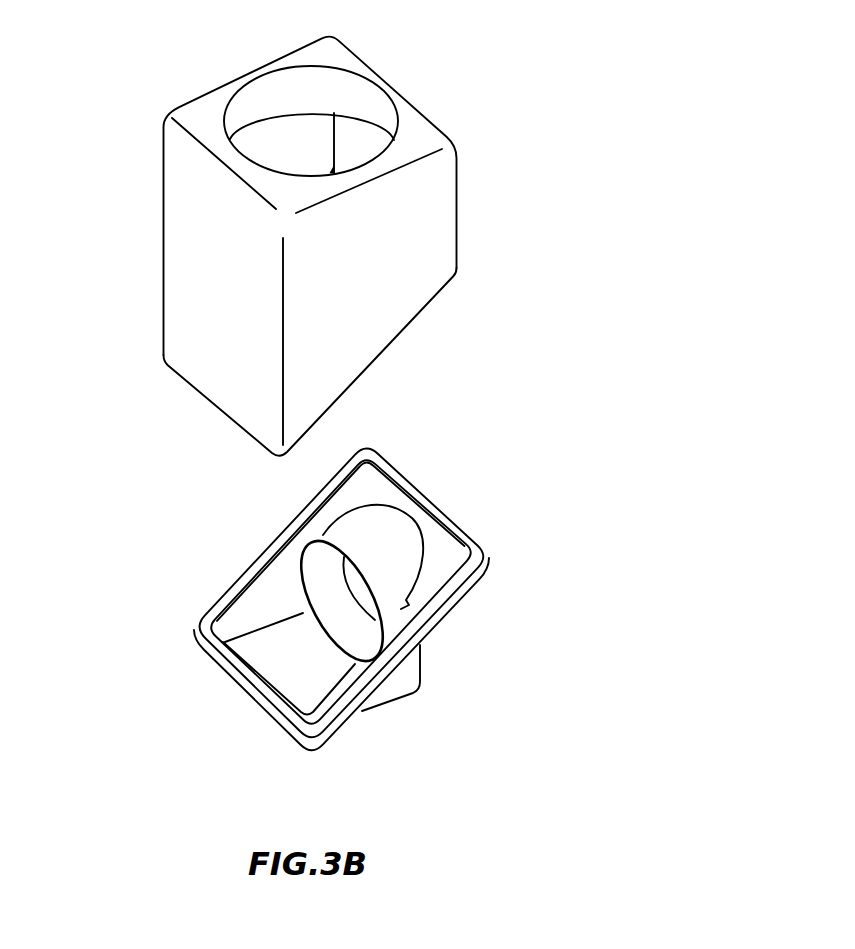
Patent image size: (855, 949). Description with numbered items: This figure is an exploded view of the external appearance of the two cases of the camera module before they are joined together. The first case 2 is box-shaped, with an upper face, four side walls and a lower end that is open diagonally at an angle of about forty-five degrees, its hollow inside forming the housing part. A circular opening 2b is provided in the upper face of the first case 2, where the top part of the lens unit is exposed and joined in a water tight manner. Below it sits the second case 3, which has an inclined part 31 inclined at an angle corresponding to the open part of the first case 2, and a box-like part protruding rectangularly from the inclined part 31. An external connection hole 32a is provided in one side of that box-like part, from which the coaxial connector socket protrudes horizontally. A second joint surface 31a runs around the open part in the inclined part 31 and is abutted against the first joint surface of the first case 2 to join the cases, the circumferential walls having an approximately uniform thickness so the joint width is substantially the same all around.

The first case 2 is at (130, 141).
The opening 2b is at (318, 95).
The second case 3 is at (174, 574).
The inclined part 31 is at (363, 495).
The second joint surface 31a is at (412, 490).
The external connection hole 32a is at (362, 603).